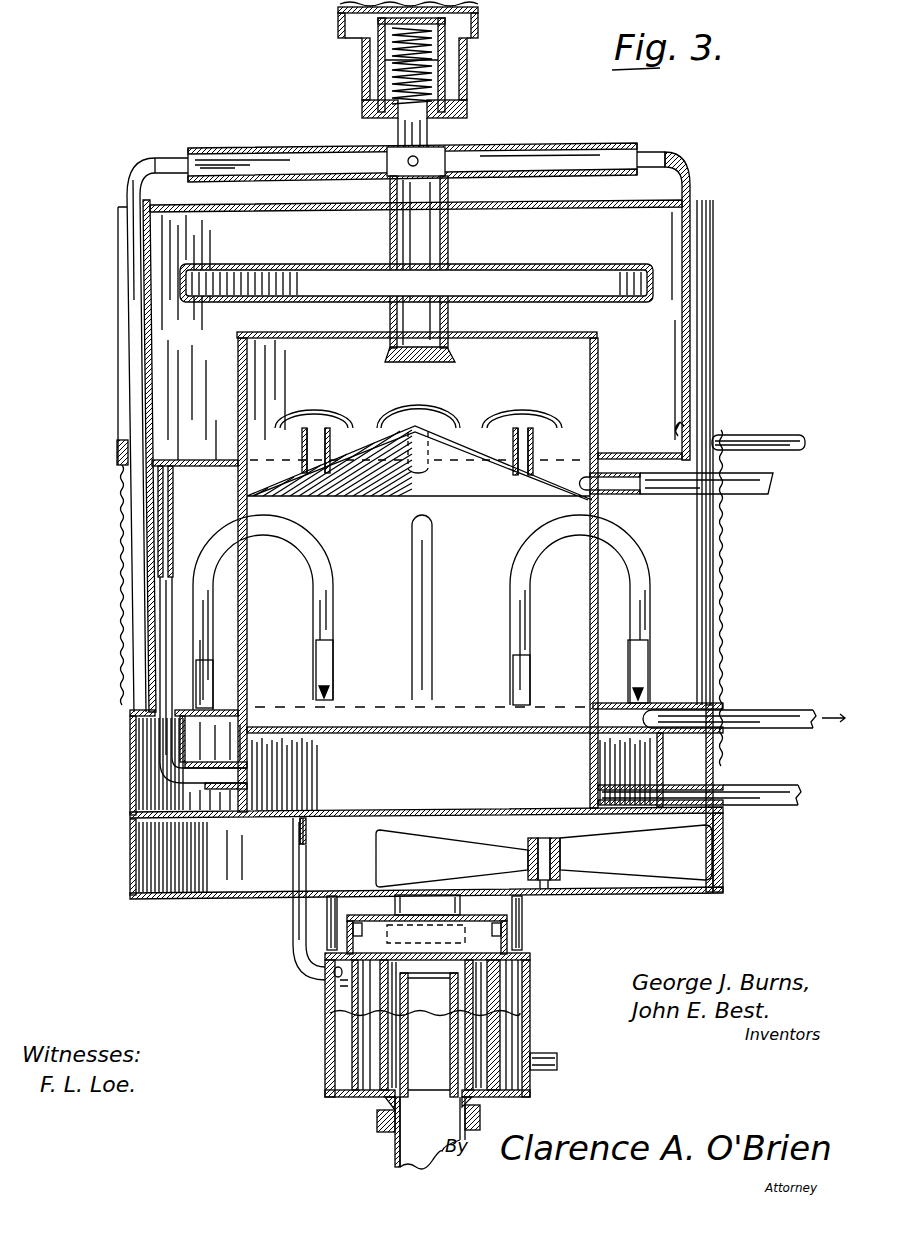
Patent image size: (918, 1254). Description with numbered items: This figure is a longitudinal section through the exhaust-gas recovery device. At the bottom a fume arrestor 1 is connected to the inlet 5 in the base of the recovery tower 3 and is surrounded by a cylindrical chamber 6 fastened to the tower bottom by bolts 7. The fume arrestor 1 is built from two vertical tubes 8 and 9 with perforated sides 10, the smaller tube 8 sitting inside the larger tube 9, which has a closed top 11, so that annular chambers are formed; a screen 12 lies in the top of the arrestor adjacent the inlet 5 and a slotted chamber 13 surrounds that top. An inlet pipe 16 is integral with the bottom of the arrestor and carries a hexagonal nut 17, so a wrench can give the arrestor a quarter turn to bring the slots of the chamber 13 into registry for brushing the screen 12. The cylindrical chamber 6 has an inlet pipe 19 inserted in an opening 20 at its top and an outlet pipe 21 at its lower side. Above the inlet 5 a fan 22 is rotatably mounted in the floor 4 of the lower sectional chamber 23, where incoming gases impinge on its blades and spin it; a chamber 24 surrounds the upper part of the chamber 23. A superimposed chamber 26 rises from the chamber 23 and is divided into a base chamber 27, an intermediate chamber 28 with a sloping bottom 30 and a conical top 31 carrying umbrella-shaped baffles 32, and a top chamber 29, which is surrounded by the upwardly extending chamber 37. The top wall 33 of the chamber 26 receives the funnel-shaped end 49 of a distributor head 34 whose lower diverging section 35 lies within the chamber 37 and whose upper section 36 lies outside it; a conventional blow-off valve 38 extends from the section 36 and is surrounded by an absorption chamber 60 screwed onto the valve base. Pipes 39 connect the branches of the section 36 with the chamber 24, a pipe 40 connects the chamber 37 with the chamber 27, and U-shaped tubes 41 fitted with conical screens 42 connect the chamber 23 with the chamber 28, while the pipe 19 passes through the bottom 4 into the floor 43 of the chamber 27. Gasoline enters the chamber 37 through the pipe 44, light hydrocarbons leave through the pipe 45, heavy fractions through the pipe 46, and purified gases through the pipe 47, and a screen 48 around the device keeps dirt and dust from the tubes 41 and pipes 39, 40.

The fume arrestor 1 is at (370, 997).
The recovery tower 3 is at (135, 783).
The floor 4 is at (665, 893).
The inlet 5 is at (440, 902).
The cylindrical chamber 6 is at (327, 1045).
The bolts 7 is at (522, 915).
The inner vertical tube 8 is at (435, 1072).
The outer vertical tube 9 is at (475, 1078).
The perforated sides 10 is at (453, 1003).
The closed top 11 is at (327, 963).
The screen 12 is at (400, 923).
The chamber 13 is at (497, 930).
The inlet pipe 16 is at (420, 1130).
The hexagonal nut 17 is at (380, 1118).
The inlet pipe 19 is at (295, 918).
The opening 20 is at (325, 985).
The outlet pipe 21 is at (557, 1062).
The fan 22 is at (680, 868).
The lower sectional chamber 23 is at (220, 797).
The chamber 24 is at (140, 738).
The superimposed chamber 26 is at (238, 478).
The base chamber 27 is at (345, 795).
The intermediate chamber 28 is at (419, 479).
The top chamber 29 is at (424, 573).
The sloping bottom 30 is at (462, 725).
The conical top 31 is at (285, 472).
The umbrella-shaped baffles 32 is at (412, 427).
The top wall 33 is at (300, 334).
The distributor head 34 is at (390, 232).
The lower diverging section 35 is at (278, 272).
The upper diverging section 36 is at (480, 157).
The chamber 37 is at (428, 522).
The blow-off valve 38 is at (372, 100).
The pipes 39 is at (127, 232).
The pipe 40 is at (163, 613).
The U-shaped tubes 41 is at (320, 568).
The conical shaped screens 42 is at (303, 810).
The floor 43 is at (475, 807).
The pipe 44 is at (790, 425).
The pipe 45 is at (745, 485).
The pipe 46 is at (773, 720).
The pipe 47 is at (770, 797).
The screen 48 is at (722, 615).
The funnel shaped end 49 is at (458, 350).
The absorption chamber 60 is at (480, 26).